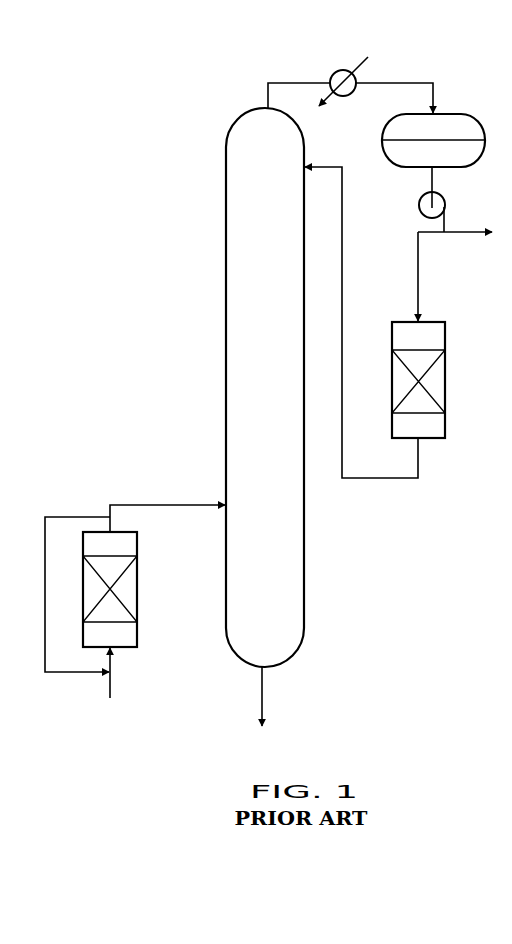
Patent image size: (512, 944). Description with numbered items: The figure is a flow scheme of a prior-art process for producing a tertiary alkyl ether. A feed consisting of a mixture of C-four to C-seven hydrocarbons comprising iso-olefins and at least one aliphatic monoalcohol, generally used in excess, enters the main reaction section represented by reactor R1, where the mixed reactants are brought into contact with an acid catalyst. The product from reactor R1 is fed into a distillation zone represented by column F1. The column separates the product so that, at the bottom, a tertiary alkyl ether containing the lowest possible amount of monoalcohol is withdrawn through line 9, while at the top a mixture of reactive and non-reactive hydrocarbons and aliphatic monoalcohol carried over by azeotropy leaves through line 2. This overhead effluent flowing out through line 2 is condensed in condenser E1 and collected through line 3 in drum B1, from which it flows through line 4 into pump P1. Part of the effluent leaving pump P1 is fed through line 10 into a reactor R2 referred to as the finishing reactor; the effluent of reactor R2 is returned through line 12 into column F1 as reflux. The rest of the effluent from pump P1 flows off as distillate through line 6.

The line 2 is at (279, 82).
The line 3 is at (407, 82).
The line 4 is at (435, 177).
The line 6 is at (473, 234).
The line 9 is at (262, 693).
The line 10 is at (419, 277).
The line 12 is at (343, 233).
The column F1 is at (265, 387).
The condenser E1 is at (335, 81).
The drum B1 is at (419, 137).
The pump P1 is at (417, 209).
The reactor R1 is at (135, 601).
The finishing reactor R2 is at (399, 380).